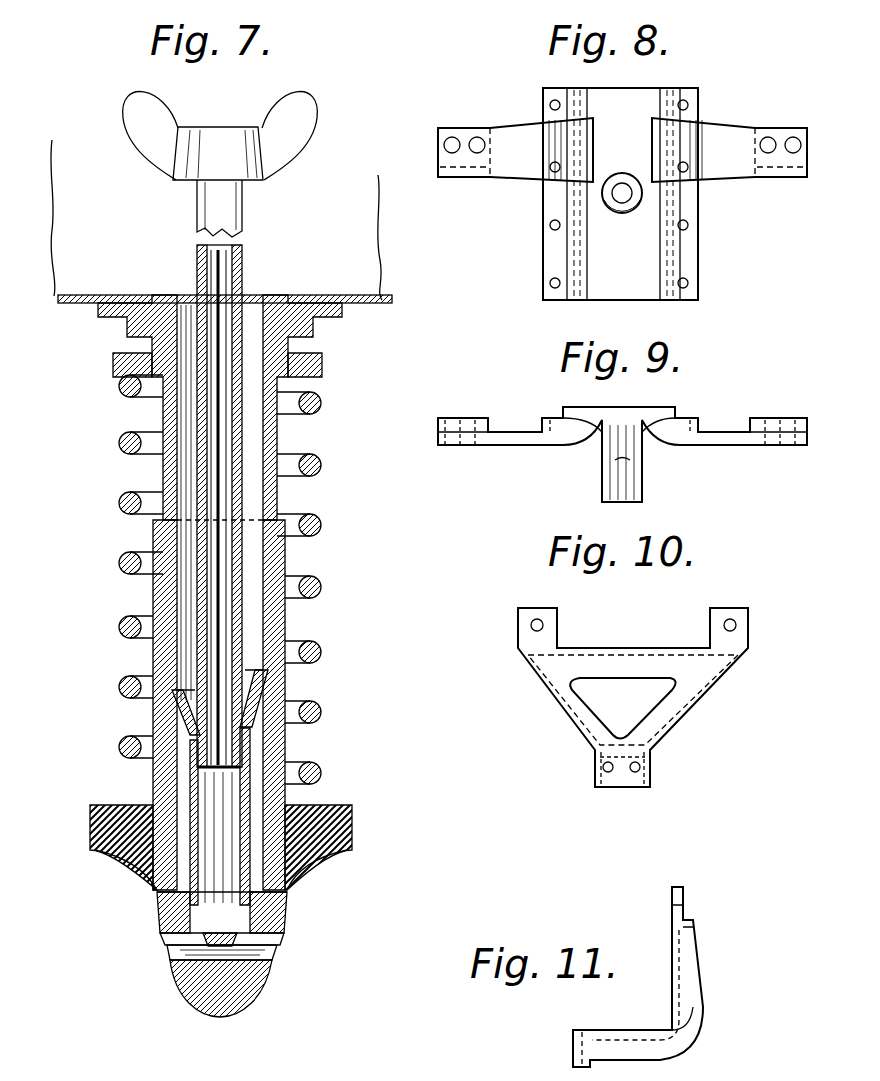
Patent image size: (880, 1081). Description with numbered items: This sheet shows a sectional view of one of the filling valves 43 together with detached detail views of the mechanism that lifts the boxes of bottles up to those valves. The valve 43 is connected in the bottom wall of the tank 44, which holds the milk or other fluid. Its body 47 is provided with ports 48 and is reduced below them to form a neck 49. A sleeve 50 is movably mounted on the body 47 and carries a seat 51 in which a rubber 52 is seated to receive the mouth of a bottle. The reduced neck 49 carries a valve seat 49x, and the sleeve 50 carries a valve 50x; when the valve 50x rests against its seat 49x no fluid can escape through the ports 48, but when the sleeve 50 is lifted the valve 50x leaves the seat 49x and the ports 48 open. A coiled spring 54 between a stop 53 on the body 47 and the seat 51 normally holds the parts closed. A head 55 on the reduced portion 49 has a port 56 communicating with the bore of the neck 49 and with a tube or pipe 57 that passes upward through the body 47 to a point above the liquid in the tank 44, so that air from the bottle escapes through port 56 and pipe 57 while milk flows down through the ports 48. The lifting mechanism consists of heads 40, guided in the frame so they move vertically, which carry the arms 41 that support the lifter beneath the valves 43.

In FIG. 8, the head 40 is at (622, 194).
In FIG. 9, the head 40 is at (622, 454).
In FIG. 10, the arm 41 is at (633, 697).
In FIG. 11, the arm 41 is at (654, 977).
In FIG. 7, the valve 43 is at (321, 588).
In FIG. 7, the tank 44 is at (362, 240).
In FIG. 7, the body 47 is at (275, 446).
In FIG. 7, the port 48 is at (247, 712).
In FIG. 7, the reduced neck 49 is at (250, 778).
In FIG. 7, the valve seat 49x is at (173, 903).
In FIG. 7, the sleeve 50 is at (155, 718).
In FIG. 7, the valve 50x is at (262, 890).
In FIG. 7, the seat 51 is at (352, 824).
In FIG. 7, the rubber 52 is at (333, 856).
In FIG. 7, the stop 53 is at (322, 364).
In FIG. 7, the coiled spring 54 is at (314, 468).
In FIG. 7, the head 55 is at (253, 985).
In FIG. 7, the port 56 is at (270, 948).
In FIG. 7, the tube or pipe 57 is at (200, 597).